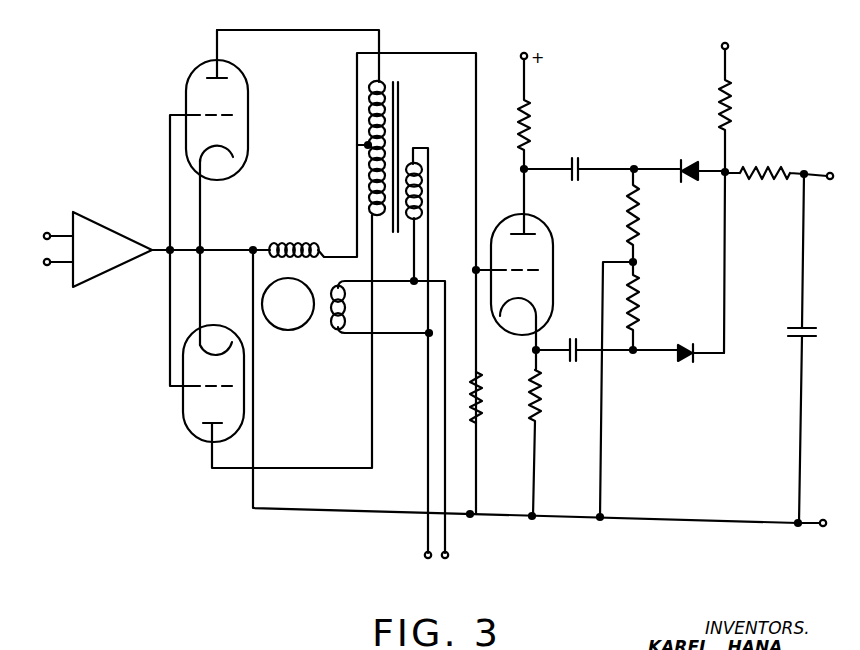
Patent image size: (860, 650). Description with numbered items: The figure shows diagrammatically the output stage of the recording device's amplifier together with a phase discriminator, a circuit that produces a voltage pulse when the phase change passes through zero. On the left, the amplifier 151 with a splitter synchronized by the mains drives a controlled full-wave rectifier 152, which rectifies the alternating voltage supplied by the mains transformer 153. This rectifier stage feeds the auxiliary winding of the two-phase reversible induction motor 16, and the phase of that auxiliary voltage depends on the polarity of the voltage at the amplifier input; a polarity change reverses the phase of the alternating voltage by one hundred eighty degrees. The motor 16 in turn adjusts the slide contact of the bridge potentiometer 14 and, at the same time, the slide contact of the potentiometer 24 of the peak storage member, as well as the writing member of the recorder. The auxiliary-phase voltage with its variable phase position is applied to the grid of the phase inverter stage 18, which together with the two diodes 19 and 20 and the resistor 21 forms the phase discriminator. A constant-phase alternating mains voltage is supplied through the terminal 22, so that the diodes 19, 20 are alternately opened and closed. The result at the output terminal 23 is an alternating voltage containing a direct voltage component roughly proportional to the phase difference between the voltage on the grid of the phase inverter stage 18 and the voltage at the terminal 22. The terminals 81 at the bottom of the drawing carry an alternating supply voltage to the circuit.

The amplifier with a splitter synchronized by the mains 151 is at (112, 261).
The controlled full-wave rectifier 152 is at (240, 214).
The mains transformer 153 is at (408, 134).
The two-phase reversible induction motor 16 is at (302, 327).
The potentiometer 14 is at (278, 378).
The potentiometer 24 is at (287, 300).
The phase inverter stage 18 is at (545, 223).
The diode 19 is at (694, 156).
The diode 20 is at (687, 367).
The resistor 21 is at (776, 168).
The terminal 22 is at (731, 38).
The output terminal 23 is at (833, 170).
The alternating voltage terminals 81 is at (439, 567).